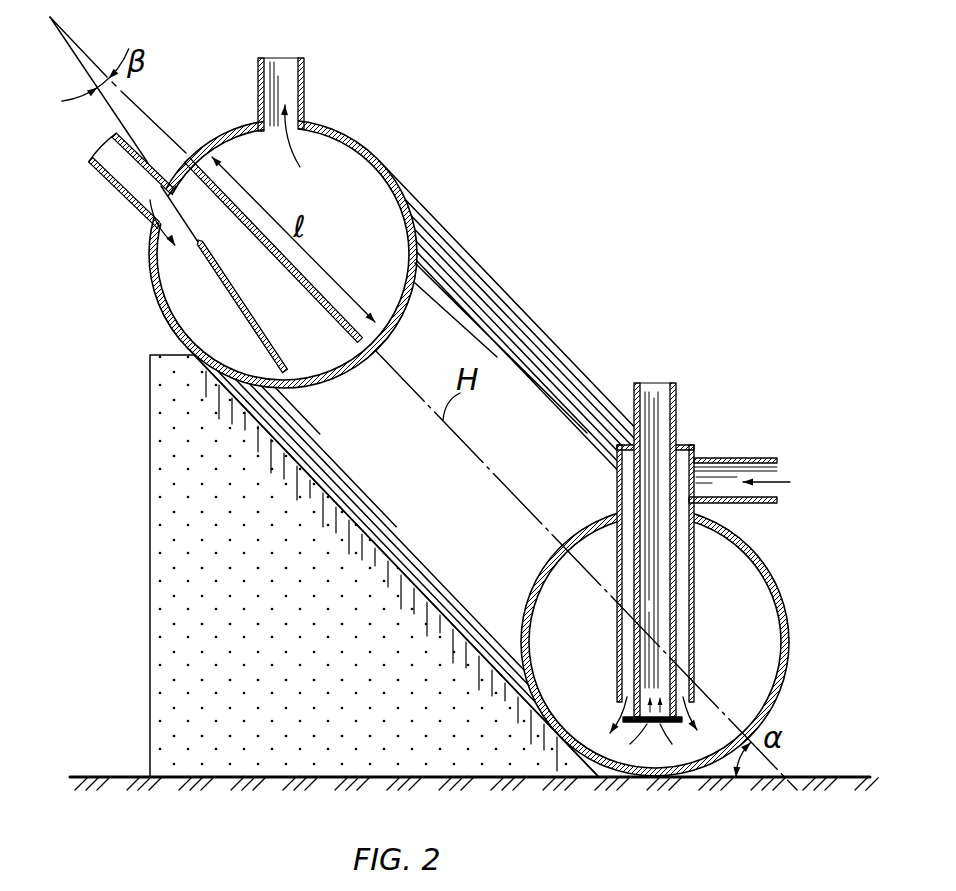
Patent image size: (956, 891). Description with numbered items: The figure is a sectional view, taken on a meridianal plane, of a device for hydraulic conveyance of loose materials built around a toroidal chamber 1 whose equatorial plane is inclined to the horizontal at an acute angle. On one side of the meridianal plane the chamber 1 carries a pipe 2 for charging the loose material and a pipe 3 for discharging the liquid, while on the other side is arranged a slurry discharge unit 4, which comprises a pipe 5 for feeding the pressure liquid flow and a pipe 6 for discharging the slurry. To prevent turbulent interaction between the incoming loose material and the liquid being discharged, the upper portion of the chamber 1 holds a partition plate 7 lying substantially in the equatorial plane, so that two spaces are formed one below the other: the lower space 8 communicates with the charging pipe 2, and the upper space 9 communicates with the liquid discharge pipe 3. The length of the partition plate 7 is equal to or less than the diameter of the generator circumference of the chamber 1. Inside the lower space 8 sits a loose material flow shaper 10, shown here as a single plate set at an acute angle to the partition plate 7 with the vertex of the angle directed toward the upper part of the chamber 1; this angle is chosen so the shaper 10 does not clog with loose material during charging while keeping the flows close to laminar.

The toroidal chamber 1 is at (512, 307).
The pipe for charging the loose material 2 is at (112, 185).
The pipe for discharging the liquid 3 is at (304, 93).
The slurry discharge unit 4 is at (693, 432).
The pipe for feeding the pressure liquid flow 5 is at (770, 503).
The pipe for discharging the slurry 6 is at (676, 398).
The partition plate 7 is at (300, 282).
The lower space 8 is at (175, 180).
The upper space 9 is at (232, 150).
The loose material flow shaper 10 is at (227, 290).